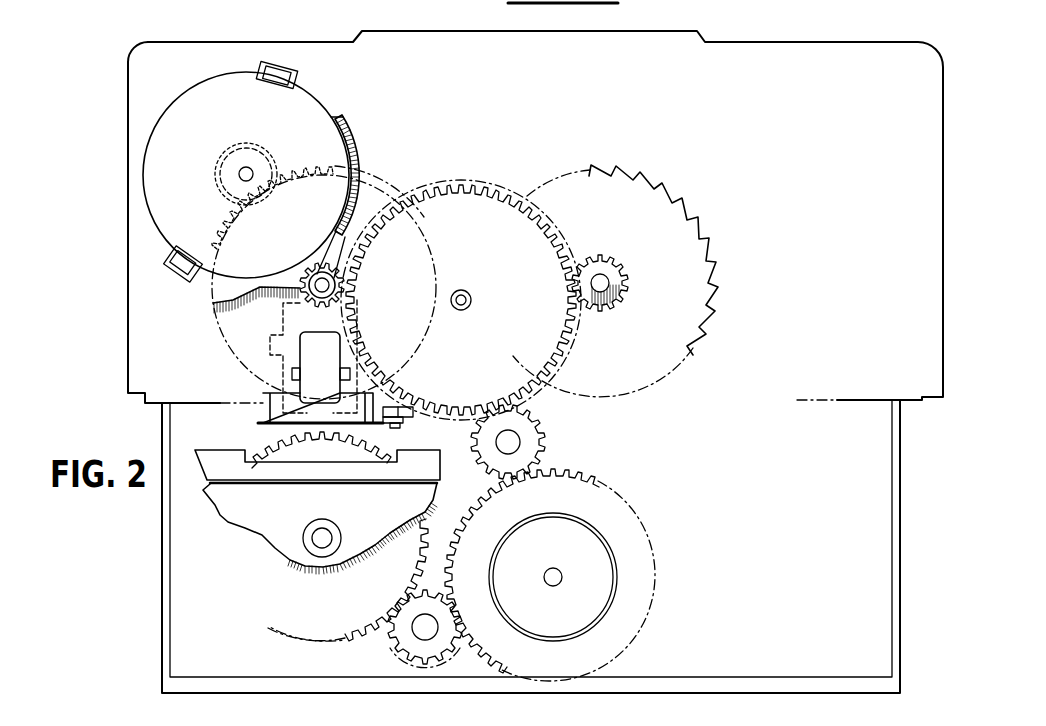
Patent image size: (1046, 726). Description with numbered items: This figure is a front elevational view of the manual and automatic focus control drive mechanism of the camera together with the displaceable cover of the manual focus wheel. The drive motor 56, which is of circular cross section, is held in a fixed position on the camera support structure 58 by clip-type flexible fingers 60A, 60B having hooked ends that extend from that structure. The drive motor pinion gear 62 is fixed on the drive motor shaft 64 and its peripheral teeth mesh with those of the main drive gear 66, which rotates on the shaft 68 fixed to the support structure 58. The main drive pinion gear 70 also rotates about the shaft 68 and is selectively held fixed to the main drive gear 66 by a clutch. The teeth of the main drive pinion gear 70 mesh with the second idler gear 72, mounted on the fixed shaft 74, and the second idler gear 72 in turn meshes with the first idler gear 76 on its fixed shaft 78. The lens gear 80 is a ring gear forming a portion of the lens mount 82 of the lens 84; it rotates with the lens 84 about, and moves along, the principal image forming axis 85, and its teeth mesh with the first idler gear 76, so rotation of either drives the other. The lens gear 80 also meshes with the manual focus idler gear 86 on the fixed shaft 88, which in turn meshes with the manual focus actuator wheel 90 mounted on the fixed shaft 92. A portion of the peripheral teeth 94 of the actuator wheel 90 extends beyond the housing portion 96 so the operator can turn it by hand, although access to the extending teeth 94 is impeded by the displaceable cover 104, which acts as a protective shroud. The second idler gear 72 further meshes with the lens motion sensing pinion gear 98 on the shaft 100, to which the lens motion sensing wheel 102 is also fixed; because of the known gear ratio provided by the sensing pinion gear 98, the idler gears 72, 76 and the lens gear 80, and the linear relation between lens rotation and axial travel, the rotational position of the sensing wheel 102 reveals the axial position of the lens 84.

The drive motor 56 is at (190, 105).
The support structure 58 is at (128, 258).
The flexible finger 60A is at (185, 262).
The flexible finger 60B is at (277, 73).
The drive motor pinion gear 62 is at (268, 163).
The drive motor shaft 64 is at (239, 174).
The main drive gear 66 is at (370, 203).
The shaft 68 is at (318, 272).
The main drive pinion gear 70 is at (300, 300).
The second idler gear 72 is at (480, 205).
The shaft 74 is at (468, 292).
The first idler gear 76 is at (528, 433).
The shaft 78 is at (500, 440).
The lens gear 80 is at (575, 468).
The lens mount 82 is at (608, 527).
The lens 84 is at (600, 565).
The principal image forming axis 85 is at (562, 580).
The manual focus idler gear 86 is at (403, 627).
The shaft 88 is at (425, 614).
The manual focus actuator wheel 90 is at (317, 588).
The shaft 92 is at (313, 543).
The peripheral teeth 94 is at (283, 445).
The housing portion 96 is at (250, 500).
The lens motion sensing pinion gear 98 is at (600, 257).
The shaft 100 is at (609, 288).
The lens motion sensing wheel 102 is at (652, 207).
The displaceable cover 104 is at (300, 378).